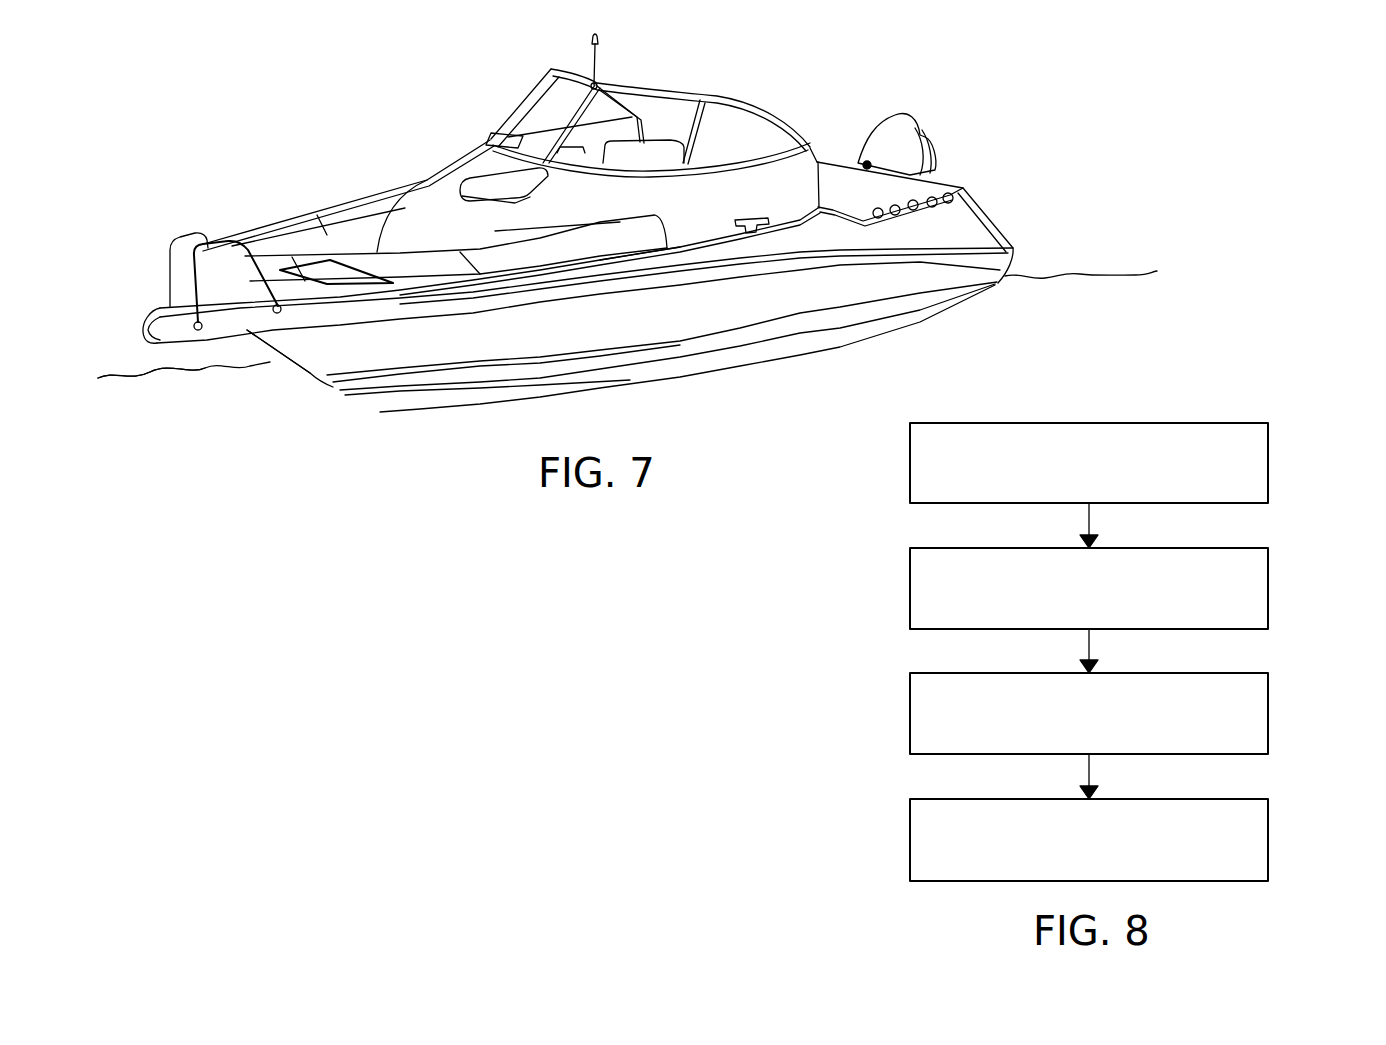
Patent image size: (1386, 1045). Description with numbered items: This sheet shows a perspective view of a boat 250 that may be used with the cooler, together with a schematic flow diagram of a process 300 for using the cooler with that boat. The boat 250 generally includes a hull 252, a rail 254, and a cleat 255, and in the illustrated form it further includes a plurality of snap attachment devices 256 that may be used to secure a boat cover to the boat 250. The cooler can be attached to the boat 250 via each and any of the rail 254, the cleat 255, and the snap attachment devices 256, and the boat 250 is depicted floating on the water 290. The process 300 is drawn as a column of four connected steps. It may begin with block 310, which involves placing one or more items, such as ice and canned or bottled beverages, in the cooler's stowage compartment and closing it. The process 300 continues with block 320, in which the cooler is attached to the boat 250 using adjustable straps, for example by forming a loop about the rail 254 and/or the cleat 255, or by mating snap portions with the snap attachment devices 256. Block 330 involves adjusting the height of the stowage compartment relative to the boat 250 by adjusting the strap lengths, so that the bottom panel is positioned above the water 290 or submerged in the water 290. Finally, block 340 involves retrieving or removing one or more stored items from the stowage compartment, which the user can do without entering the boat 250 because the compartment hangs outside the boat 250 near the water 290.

In FIG. 7, the boat 250 is at (296, 103).
In FIG. 7, the hull 252 is at (362, 372).
In FIG. 7, the rail 254 is at (655, 226).
In FIG. 7, the cleat 255 is at (746, 220).
In FIG. 7, the snap attachment devices 256 is at (946, 190).
In FIG. 7, the water 290 is at (110, 378).
In FIG. 8, the process 300 is at (1256, 380).
In FIG. 8, the block 310 is at (1268, 441).
In FIG. 8, the block 320 is at (1268, 567).
In FIG. 8, the block 330 is at (1268, 690).
In FIG. 8, the block 340 is at (1268, 817).